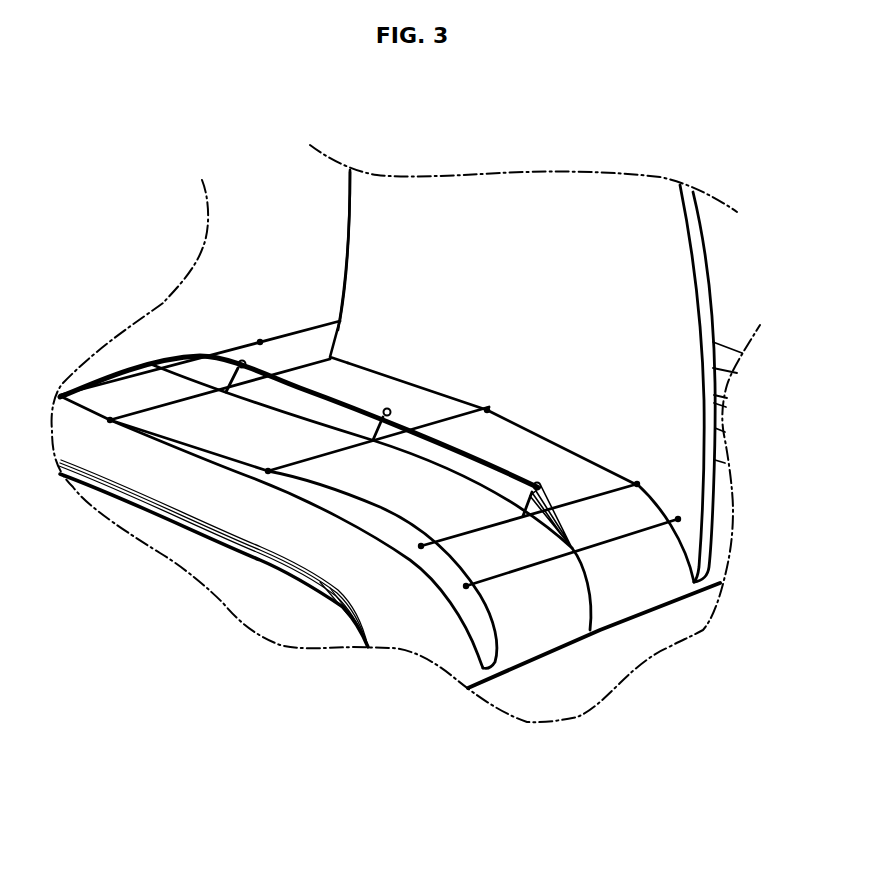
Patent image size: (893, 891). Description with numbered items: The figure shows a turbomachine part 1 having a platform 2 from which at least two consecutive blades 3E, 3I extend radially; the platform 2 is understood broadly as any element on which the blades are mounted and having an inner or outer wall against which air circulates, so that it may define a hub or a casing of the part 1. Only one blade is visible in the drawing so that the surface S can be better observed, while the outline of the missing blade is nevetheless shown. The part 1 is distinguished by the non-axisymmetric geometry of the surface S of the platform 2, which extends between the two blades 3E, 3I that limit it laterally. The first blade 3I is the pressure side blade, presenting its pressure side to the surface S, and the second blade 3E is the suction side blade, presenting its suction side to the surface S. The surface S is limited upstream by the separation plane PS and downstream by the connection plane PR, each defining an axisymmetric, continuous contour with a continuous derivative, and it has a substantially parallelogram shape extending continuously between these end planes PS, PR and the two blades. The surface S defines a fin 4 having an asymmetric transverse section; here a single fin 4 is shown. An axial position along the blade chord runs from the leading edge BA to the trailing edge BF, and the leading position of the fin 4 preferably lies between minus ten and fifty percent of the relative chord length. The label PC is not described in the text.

The turbomachine part 1 is at (247, 126).
The platform 2 is at (682, 619).
The first blade 3I is at (474, 252).
The second blade 3E is at (224, 455).
The fin 4 is at (418, 453).
The trailing edge BF is at (344, 225).
The leading edge BA is at (710, 287).
The connection plane PR is at (210, 352).
The connecting members PC is at (588, 495).
The separation plane PS is at (620, 622).
The surface S is at (375, 480).